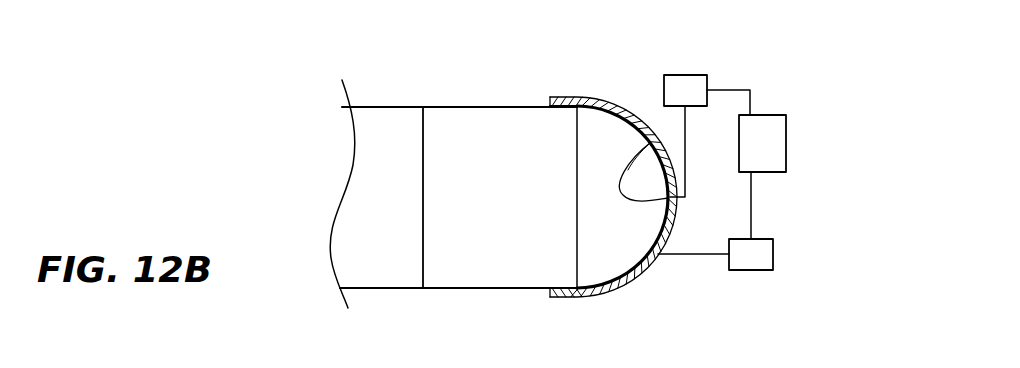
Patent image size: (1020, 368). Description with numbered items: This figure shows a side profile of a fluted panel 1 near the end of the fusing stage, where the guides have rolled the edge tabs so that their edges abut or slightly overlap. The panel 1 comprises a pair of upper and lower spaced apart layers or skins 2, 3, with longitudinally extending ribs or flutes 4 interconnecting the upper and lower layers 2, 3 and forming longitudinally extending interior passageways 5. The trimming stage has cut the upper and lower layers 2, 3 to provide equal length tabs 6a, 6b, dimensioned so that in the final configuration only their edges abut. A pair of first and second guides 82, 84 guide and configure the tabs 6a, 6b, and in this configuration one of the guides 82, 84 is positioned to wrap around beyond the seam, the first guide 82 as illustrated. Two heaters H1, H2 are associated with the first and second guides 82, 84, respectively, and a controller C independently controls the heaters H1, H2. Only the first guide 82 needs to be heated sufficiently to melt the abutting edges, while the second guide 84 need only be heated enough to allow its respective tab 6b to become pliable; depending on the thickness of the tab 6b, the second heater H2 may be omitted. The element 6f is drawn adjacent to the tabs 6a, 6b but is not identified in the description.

The panel 1 is at (444, 74).
The upper layer 2 is at (388, 106).
The lower layer 3 is at (395, 289).
The flutes 4 is at (577, 158).
The interior passageways 5 is at (487, 238).
The tab 6a is at (650, 145).
The tab 6b is at (652, 247).
The electrode lead 6f is at (660, 156).
The first guide 82 is at (617, 105).
The second guide 84 is at (640, 270).
The heater H1 is at (689, 72).
The heater H2 is at (755, 276).
The controller C is at (771, 157).